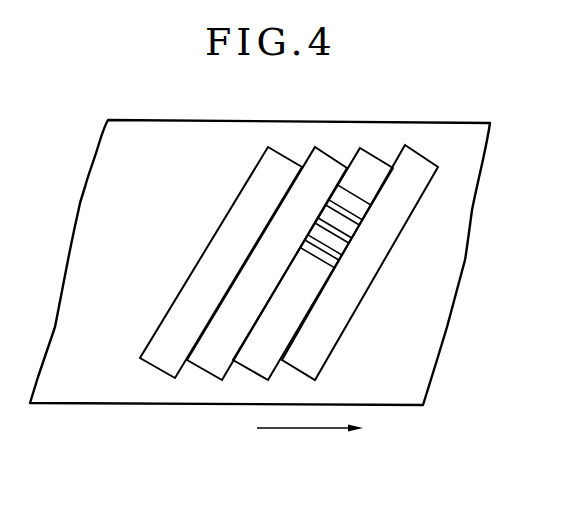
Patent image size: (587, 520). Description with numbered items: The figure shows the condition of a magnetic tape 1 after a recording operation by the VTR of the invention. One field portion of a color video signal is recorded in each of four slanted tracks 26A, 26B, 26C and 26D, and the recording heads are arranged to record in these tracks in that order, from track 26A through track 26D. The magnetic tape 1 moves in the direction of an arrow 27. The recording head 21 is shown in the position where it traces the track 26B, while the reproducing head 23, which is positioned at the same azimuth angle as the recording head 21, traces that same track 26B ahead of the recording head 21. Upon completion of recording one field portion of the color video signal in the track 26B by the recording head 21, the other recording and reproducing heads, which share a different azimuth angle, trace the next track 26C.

The magnetic tape 1 is at (352, 132).
The recording head 21 is at (335, 256).
The reproducing head 23 is at (328, 210).
The track 26A is at (317, 358).
The track 26B is at (255, 366).
The track 26C is at (207, 365).
The track 26D is at (155, 347).
The arrow 27 is at (307, 430).